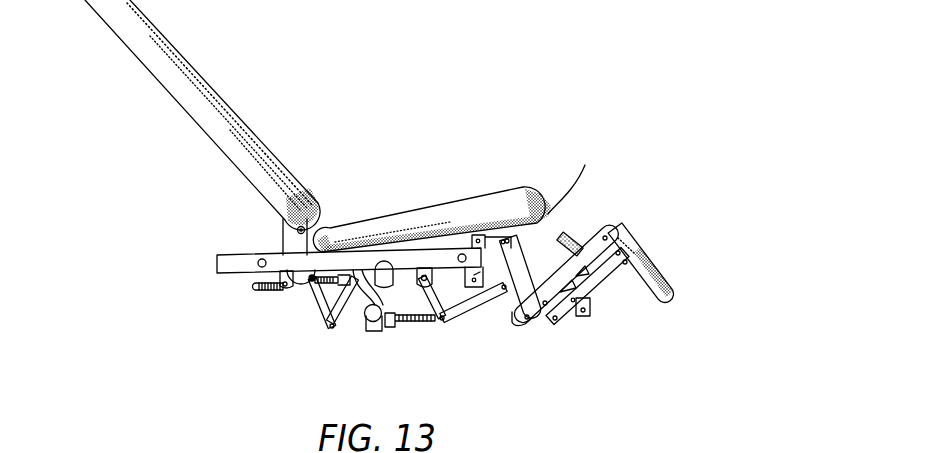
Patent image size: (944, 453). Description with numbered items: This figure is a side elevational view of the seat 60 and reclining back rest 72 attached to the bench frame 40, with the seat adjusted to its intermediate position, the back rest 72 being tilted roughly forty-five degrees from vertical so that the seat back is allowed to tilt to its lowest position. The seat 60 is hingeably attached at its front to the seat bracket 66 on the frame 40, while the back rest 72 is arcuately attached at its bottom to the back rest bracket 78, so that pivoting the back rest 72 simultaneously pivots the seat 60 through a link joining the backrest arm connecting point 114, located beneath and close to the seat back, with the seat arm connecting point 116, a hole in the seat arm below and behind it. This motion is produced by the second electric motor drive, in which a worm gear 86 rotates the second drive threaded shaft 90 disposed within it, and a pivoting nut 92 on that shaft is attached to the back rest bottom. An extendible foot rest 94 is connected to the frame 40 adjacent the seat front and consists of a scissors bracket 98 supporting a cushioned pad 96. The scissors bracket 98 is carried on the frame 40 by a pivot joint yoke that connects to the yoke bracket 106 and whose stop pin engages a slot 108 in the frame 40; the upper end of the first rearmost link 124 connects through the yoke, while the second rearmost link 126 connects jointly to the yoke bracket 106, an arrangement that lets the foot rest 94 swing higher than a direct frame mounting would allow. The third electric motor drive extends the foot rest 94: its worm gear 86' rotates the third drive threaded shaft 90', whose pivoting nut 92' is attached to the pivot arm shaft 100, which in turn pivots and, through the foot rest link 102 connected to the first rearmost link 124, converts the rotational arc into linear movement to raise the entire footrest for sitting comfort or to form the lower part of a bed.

The reclining back rest 72 is at (240, 117).
The back rest bracket 78 is at (282, 252).
The frame 40 is at (218, 267).
The seat 60 is at (524, 181).
The seat bracket 66 is at (540, 235).
The worm gear 86 is at (373, 225).
The pivot arm shaft 100 is at (418, 268).
The yoke bracket 106 is at (553, 237).
The second rearmost link 126 is at (570, 238).
The cushioned pad 96 is at (583, 237).
The scissors bracket 98 is at (596, 298).
The first rearmost link 124 is at (507, 320).
The foot rest link 102 is at (510, 305).
The extendible foot rest 94 is at (632, 307).
The second drive threaded shaft 90 is at (217, 328).
The pivoting nut 92 is at (265, 328).
The backrest arm connecting point 114 is at (306, 291).
The seat arm connecting point 116 is at (348, 291).
The worm gear 86' is at (352, 329).
The slot 108 is at (414, 323).
The pivoting nut 92' is at (438, 332).
The third drive threaded shaft 90' is at (461, 339).